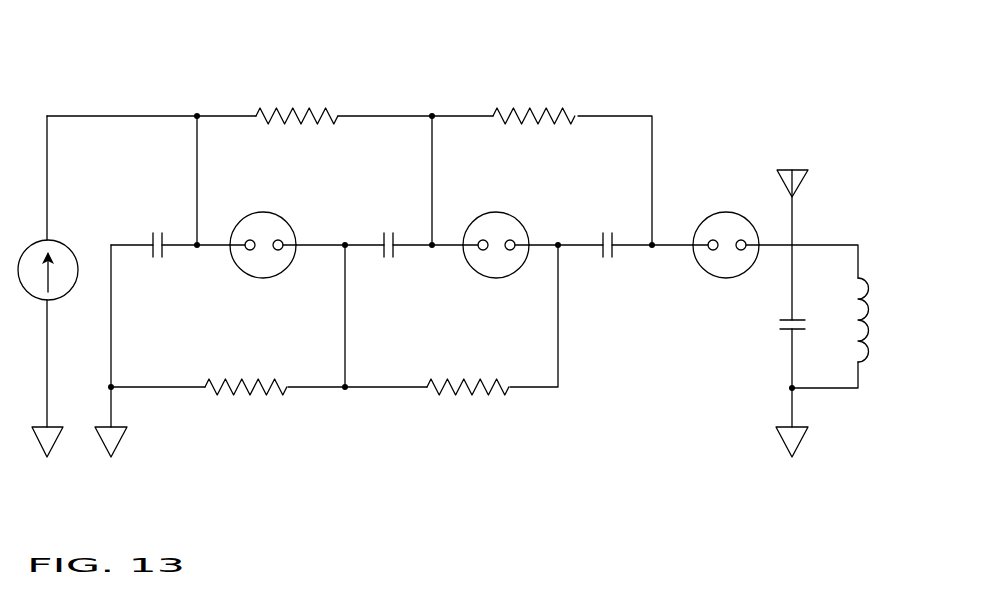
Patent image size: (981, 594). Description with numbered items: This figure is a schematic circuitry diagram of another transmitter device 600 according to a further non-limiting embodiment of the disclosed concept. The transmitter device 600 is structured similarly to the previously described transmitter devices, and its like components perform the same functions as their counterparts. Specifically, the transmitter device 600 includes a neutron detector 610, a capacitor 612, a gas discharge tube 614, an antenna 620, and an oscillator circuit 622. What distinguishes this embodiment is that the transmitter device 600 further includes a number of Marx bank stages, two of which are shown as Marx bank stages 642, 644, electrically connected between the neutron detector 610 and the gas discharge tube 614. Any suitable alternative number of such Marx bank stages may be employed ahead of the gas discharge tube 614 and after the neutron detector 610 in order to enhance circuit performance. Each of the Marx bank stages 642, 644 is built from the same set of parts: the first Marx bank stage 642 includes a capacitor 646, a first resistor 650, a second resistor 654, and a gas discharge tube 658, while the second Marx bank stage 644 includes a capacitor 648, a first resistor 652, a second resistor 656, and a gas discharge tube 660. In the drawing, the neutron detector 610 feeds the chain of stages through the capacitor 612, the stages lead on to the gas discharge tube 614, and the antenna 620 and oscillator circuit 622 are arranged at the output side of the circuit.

The transmitter device 600 is at (782, 88).
The neutron detector 610 is at (70, 238).
The capacitor 612 is at (159, 269).
The gas discharge tube 614 is at (711, 281).
The antenna 620 is at (812, 178).
The oscillator circuit 622 is at (879, 404).
The Marx bank stage 642 is at (385, 88).
The Marx bank stage 644 is at (622, 88).
The capacitor 646 is at (381, 229).
The capacitor 648 is at (600, 230).
The first resistor 650 is at (279, 105).
The first resistor 652 is at (538, 101).
The second resistor 654 is at (254, 402).
The second resistor 656 is at (472, 399).
The gas discharge tube 658 is at (267, 285).
The gas discharge tube 660 is at (487, 281).